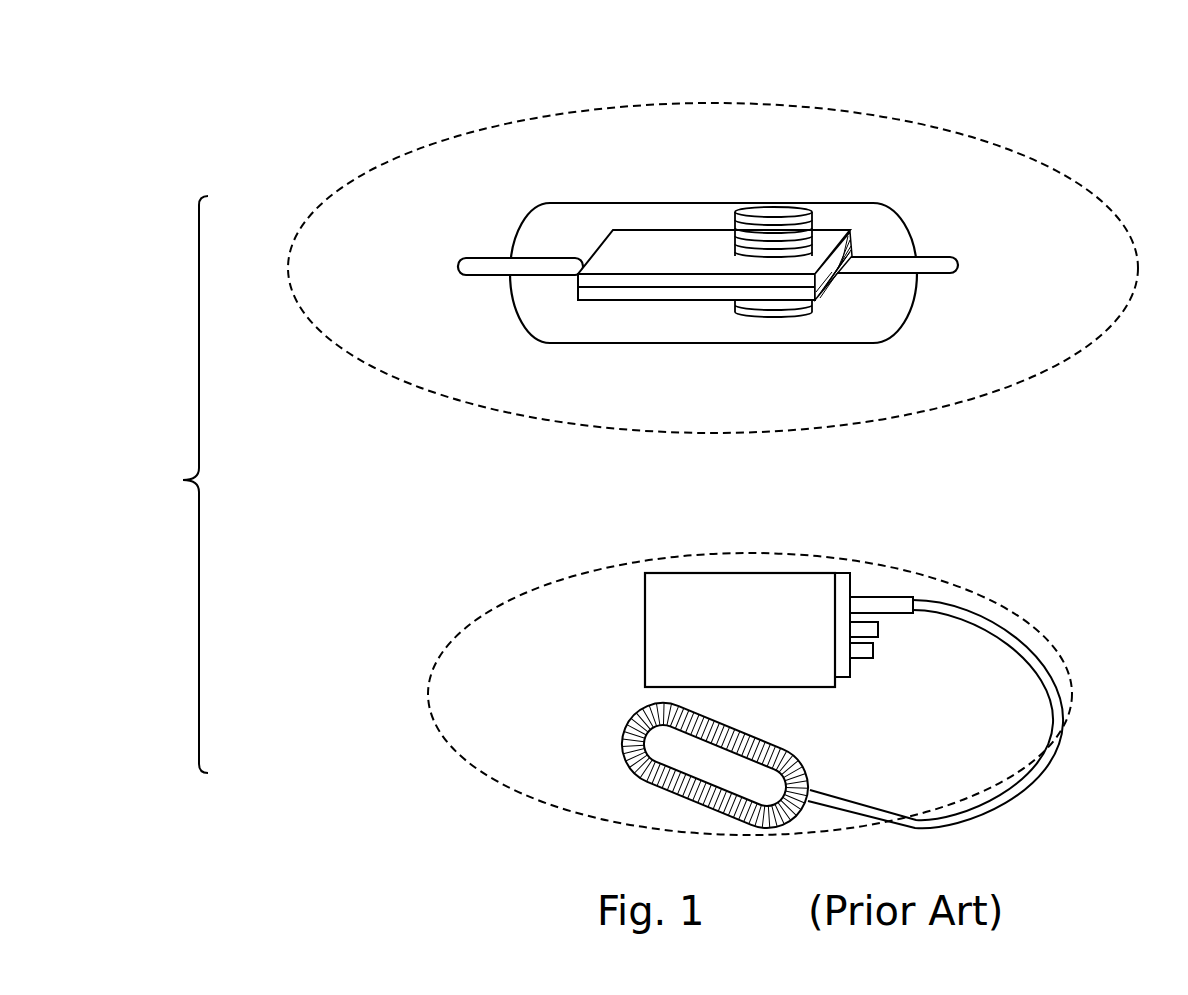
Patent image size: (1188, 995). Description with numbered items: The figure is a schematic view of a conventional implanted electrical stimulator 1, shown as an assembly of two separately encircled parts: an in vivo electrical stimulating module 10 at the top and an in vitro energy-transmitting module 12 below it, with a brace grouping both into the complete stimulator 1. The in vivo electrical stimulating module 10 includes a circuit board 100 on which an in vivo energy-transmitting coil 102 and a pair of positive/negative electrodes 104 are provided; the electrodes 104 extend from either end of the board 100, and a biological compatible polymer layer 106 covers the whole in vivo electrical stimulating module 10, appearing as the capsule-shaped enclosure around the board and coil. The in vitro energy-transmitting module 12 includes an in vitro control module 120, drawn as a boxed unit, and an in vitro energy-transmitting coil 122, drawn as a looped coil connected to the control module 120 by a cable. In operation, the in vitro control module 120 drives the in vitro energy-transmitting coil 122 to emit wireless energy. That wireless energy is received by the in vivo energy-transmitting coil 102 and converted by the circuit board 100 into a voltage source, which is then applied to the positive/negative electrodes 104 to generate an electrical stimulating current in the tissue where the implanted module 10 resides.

The reed switch system 1 is at (180, 484).
The in vivo electrical stimulating module 10 is at (495, 127).
The in vitro energy-transmitting module 12 is at (558, 582).
The circuit board 100 is at (845, 238).
The in vivo energy-transmitting coil 102 is at (762, 212).
The positive/negative electrodes 104 is at (478, 266).
The biological compatible polymer layer 106 is at (520, 318).
The in vitro control module 120 is at (645, 637).
The in vitro energy-transmitting coil 122 is at (620, 747).